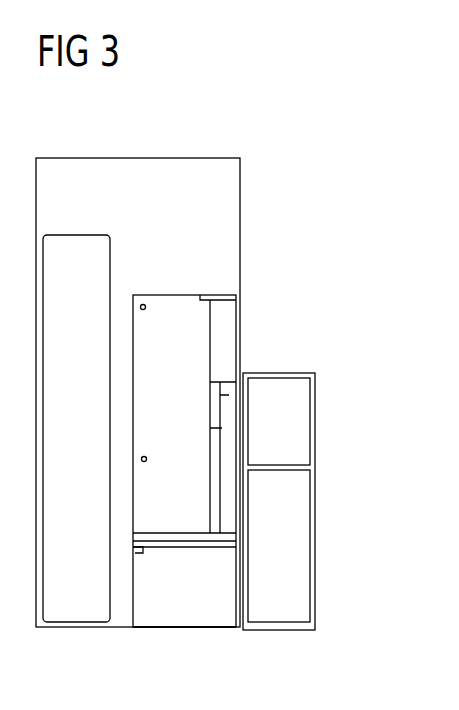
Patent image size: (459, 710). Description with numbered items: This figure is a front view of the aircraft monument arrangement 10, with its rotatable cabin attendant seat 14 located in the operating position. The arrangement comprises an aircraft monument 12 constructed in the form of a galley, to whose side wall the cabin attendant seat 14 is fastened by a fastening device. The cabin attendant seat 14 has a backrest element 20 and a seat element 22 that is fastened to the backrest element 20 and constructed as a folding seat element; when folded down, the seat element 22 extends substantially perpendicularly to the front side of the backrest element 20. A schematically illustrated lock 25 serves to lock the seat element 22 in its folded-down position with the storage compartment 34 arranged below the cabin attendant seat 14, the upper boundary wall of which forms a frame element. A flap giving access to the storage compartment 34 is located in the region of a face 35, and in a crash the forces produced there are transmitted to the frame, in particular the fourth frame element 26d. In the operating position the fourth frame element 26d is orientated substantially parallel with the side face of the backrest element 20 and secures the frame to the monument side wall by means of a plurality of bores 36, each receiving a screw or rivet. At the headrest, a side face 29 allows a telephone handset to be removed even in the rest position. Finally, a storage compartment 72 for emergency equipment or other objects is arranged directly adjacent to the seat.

The aircraft monument arrangement 10 is at (275, 170).
The aircraft monument 12 is at (180, 168).
The cabin attendant seat 14 is at (262, 292).
The backrest element 20 is at (222, 394).
The seat element 22 is at (183, 550).
The lock 25 is at (140, 549).
The fourth frame element 26d is at (140, 493).
The side face 29 is at (225, 322).
The storage compartment 34 is at (218, 608).
The face 35 is at (222, 549).
The bores 36 is at (145, 309).
The storage compartment 72 is at (298, 423).